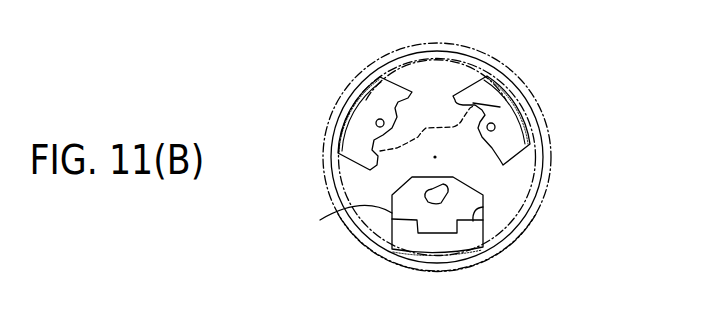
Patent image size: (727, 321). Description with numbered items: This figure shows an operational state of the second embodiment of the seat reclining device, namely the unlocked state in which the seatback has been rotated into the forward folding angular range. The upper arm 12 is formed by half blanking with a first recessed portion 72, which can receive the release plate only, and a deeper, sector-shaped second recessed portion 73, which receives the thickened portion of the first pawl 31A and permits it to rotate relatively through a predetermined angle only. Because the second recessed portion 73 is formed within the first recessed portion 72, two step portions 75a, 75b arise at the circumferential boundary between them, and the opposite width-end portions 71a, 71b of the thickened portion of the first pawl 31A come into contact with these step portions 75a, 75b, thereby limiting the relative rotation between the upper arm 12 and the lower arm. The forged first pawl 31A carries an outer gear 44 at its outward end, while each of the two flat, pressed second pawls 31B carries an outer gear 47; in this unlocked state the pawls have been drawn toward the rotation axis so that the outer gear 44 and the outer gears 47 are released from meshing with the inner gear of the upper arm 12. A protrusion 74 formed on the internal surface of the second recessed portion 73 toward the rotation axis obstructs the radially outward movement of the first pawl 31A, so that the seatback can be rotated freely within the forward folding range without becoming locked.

The upper arm 12 is at (474, 54).
The first pawl 31A is at (414, 250).
The second pawl 31B is at (364, 94).
The outer gear 44 is at (458, 254).
The outer gear 47 is at (338, 143).
The width-end portion 71a is at (390, 214).
The width-end portion 71b is at (483, 204).
The first recessed portion 72 is at (432, 90).
The second recessed portion 73 is at (541, 193).
The protrusion 74 is at (513, 240).
The step portion 75a is at (330, 214).
The step portion 75b is at (524, 112).